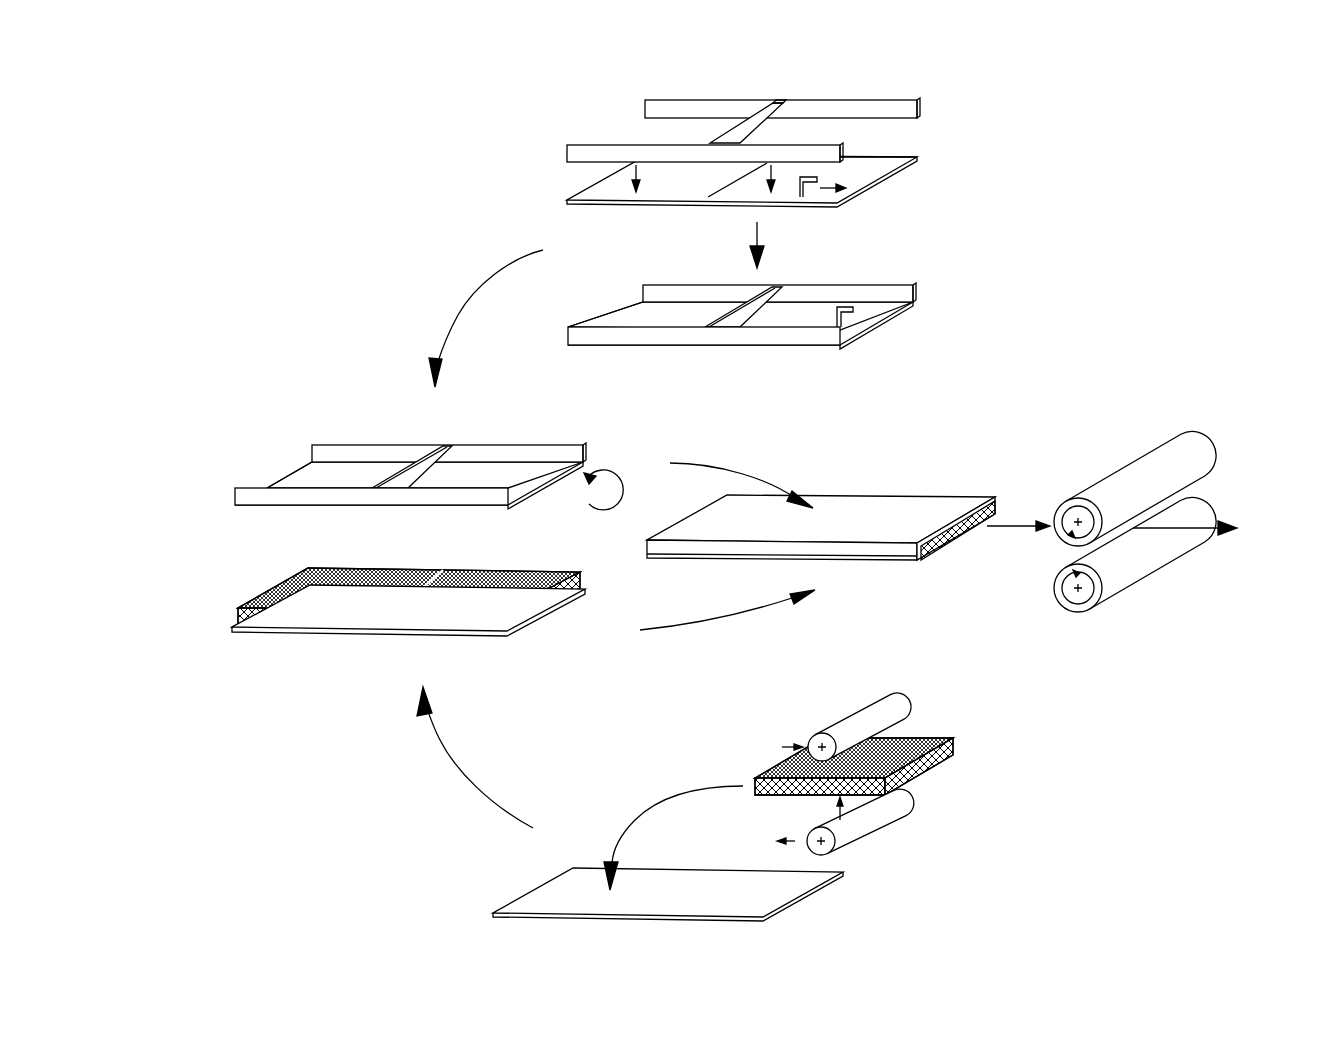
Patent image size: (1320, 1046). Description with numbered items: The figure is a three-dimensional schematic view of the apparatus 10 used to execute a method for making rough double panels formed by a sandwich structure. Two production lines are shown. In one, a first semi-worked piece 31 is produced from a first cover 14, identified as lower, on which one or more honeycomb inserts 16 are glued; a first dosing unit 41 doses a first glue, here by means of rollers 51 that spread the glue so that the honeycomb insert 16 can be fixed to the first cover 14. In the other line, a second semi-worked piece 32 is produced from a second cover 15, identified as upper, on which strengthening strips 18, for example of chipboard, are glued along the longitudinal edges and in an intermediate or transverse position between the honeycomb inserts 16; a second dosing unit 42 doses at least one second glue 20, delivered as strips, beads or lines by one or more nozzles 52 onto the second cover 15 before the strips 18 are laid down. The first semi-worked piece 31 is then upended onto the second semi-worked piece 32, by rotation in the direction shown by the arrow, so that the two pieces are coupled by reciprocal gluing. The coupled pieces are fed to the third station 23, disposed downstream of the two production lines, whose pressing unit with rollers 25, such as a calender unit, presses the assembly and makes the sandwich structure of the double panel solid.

The apparatus 10 is at (1187, 747).
The first cover 14 is at (262, 628).
The second cover 15 is at (877, 168).
The honeycomb insert 16 is at (262, 595).
The strengthening strips 18 is at (578, 155).
The second glue 20 is at (903, 148).
The third station 23 is at (1165, 478).
The pressing unit with rollers 25 is at (1208, 453).
The first semi-worked piece 31 is at (330, 637).
The second semi-worked piece 32 is at (358, 438).
The first dosing unit 41 is at (878, 747).
The second dosing unit 42 is at (897, 372).
The rollers 51 is at (850, 727).
The nozzles 52 is at (817, 178).